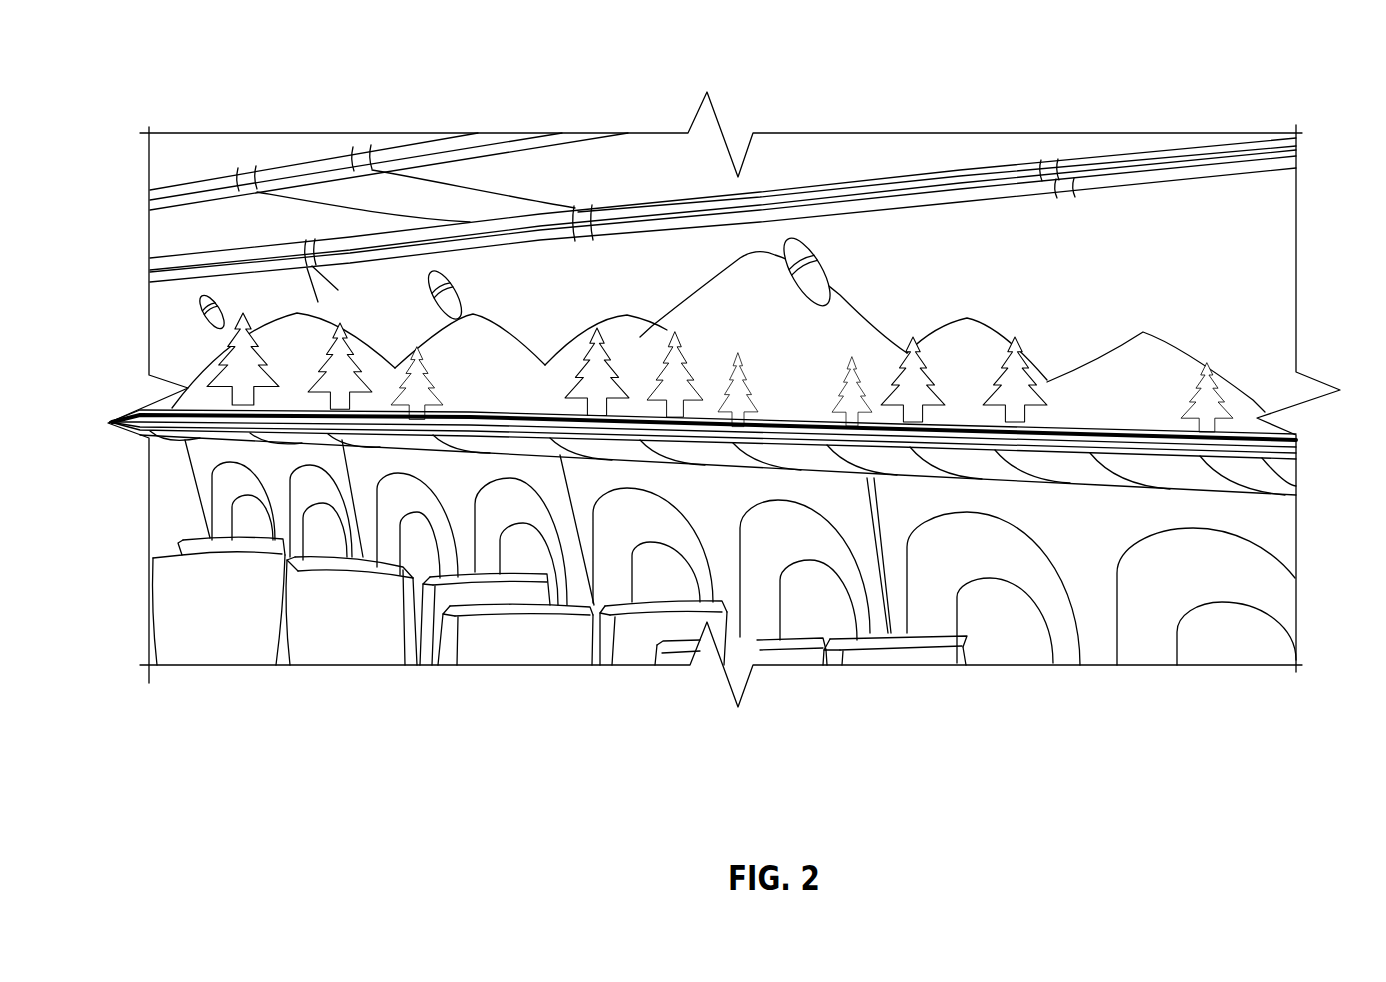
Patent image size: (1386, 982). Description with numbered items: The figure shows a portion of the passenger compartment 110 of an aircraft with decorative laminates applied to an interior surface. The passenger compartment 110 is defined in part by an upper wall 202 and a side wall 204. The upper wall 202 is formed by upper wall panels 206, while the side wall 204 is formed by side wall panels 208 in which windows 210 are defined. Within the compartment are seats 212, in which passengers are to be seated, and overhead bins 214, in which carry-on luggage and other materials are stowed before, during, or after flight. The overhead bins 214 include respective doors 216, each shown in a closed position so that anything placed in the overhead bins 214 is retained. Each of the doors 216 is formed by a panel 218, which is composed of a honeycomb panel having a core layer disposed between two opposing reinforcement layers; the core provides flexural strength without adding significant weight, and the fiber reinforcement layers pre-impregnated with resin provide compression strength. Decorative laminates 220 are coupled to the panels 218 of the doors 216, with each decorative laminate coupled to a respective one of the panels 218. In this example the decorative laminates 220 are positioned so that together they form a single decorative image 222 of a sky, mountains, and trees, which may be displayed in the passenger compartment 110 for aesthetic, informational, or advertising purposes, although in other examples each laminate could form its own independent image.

The passenger compartment 110 is at (244, 66).
The upper wall 202 is at (141, 179).
The side wall 204 is at (1312, 608).
The upper wall panels 206 is at (160, 242).
The side wall panels 208 is at (1283, 533).
The windows 210 is at (240, 523).
The seats 212 is at (173, 637).
The overhead bins 214 is at (589, 198).
The doors 216 is at (387, 285).
The panels 218 is at (308, 242).
The decorative laminates 220 is at (693, 243).
The decorative image 222 is at (1001, 294).